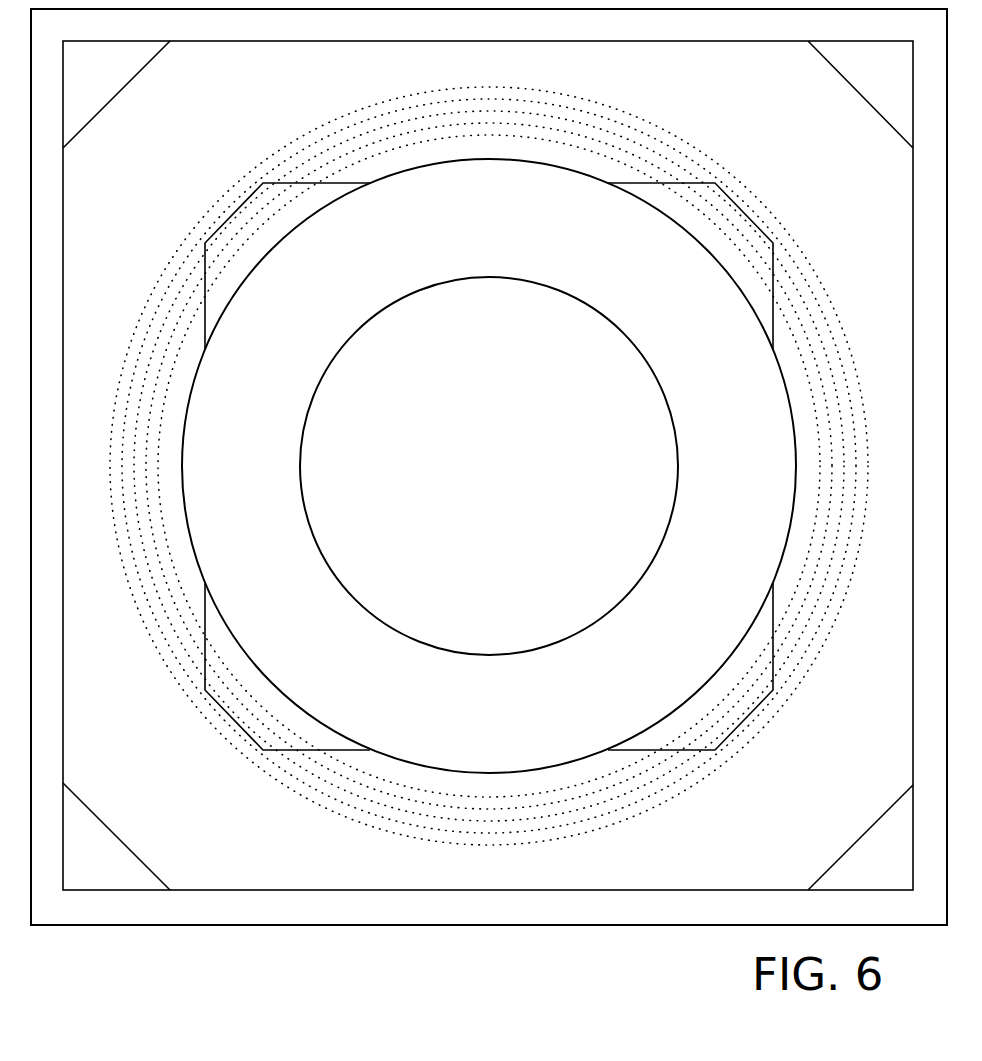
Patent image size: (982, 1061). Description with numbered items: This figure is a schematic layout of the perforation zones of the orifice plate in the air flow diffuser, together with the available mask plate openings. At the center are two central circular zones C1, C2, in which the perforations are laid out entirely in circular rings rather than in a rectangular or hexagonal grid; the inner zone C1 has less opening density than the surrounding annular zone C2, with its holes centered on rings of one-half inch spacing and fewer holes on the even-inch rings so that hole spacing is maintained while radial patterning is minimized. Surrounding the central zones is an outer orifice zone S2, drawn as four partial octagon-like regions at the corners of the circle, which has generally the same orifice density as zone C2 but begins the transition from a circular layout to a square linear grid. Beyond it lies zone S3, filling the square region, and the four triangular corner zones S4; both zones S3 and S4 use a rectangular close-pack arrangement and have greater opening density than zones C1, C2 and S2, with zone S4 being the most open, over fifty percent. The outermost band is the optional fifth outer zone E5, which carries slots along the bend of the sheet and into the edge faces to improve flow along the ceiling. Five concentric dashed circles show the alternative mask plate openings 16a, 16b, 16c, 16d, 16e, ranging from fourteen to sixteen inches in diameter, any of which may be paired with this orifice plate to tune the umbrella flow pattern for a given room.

The mask plate central opening 16a is at (502, 135).
The mask plate central opening 16b is at (558, 133).
The mask plate central opening 16c is at (612, 135).
The mask plate central opening 16d is at (682, 157).
The mask plate central opening 16e is at (742, 185).
The outer orifice zone S2 is at (489, 466).
The outer orifice zone S3 is at (488, 465).
The outer orifice zone S4 is at (488, 465).
The fifth outer zone E5 is at (489, 467).
The central zone C1 is at (489, 466).
The central zone C2 is at (489, 466).